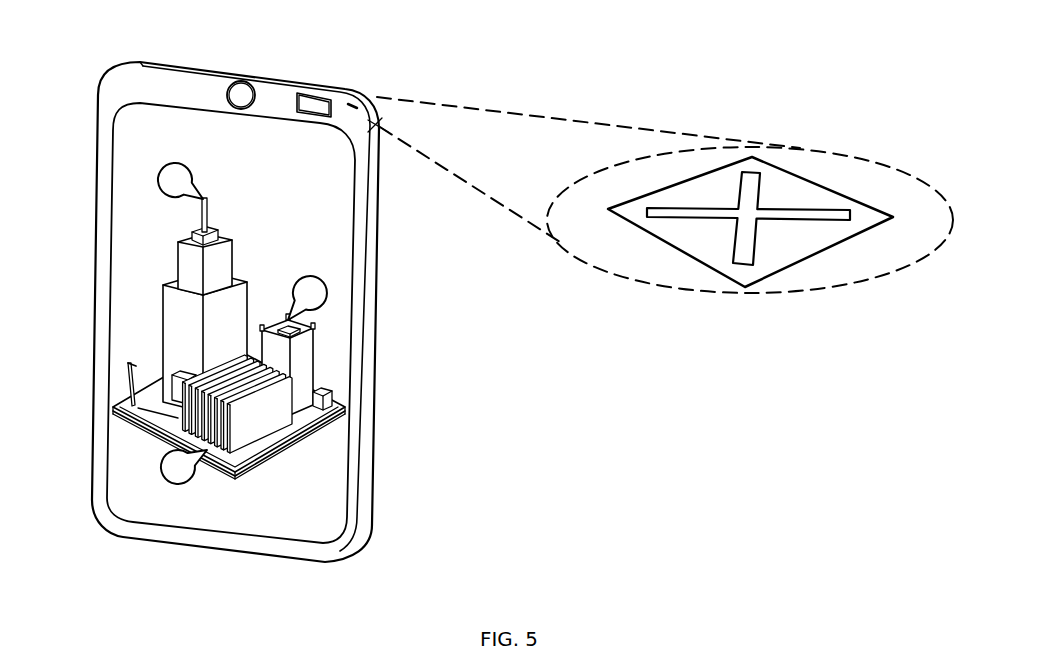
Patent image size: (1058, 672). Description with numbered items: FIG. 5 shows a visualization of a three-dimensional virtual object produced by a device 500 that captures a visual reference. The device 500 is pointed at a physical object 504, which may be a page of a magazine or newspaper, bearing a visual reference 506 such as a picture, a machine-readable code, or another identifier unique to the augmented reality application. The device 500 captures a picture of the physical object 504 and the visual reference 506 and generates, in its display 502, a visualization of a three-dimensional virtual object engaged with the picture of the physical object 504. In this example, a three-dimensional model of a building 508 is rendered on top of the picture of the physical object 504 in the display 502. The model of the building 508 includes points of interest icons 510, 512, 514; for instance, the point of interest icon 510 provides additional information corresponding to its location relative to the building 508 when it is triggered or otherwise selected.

The device 500 is at (123, 85).
The display 502 is at (197, 127).
The physical object 504 is at (322, 440).
The visual reference 506 is at (748, 246).
The three-dimensional model of a building 508 is at (326, 358).
The point of interest icon 510 is at (327, 280).
The point of interest icon 512 is at (163, 192).
The point of interest icon 514 is at (161, 472).